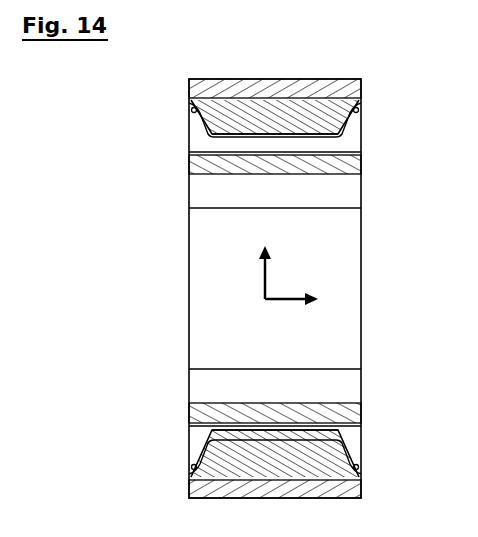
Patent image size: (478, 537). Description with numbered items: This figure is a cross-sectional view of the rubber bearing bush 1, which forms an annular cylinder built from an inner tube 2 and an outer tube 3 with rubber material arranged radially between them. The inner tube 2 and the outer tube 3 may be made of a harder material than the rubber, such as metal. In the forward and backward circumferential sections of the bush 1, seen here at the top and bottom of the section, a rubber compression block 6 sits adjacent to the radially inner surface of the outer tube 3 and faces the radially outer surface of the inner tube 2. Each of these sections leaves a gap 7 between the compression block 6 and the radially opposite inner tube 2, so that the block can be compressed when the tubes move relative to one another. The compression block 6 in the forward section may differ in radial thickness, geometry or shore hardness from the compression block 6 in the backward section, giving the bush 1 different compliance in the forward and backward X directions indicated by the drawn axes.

The bush 1 is at (165, 63).
The inner tube 2 is at (349, 170).
The outer tube 3 is at (198, 87).
The compression block 6 is at (308, 110).
The gap 7 is at (266, 122).